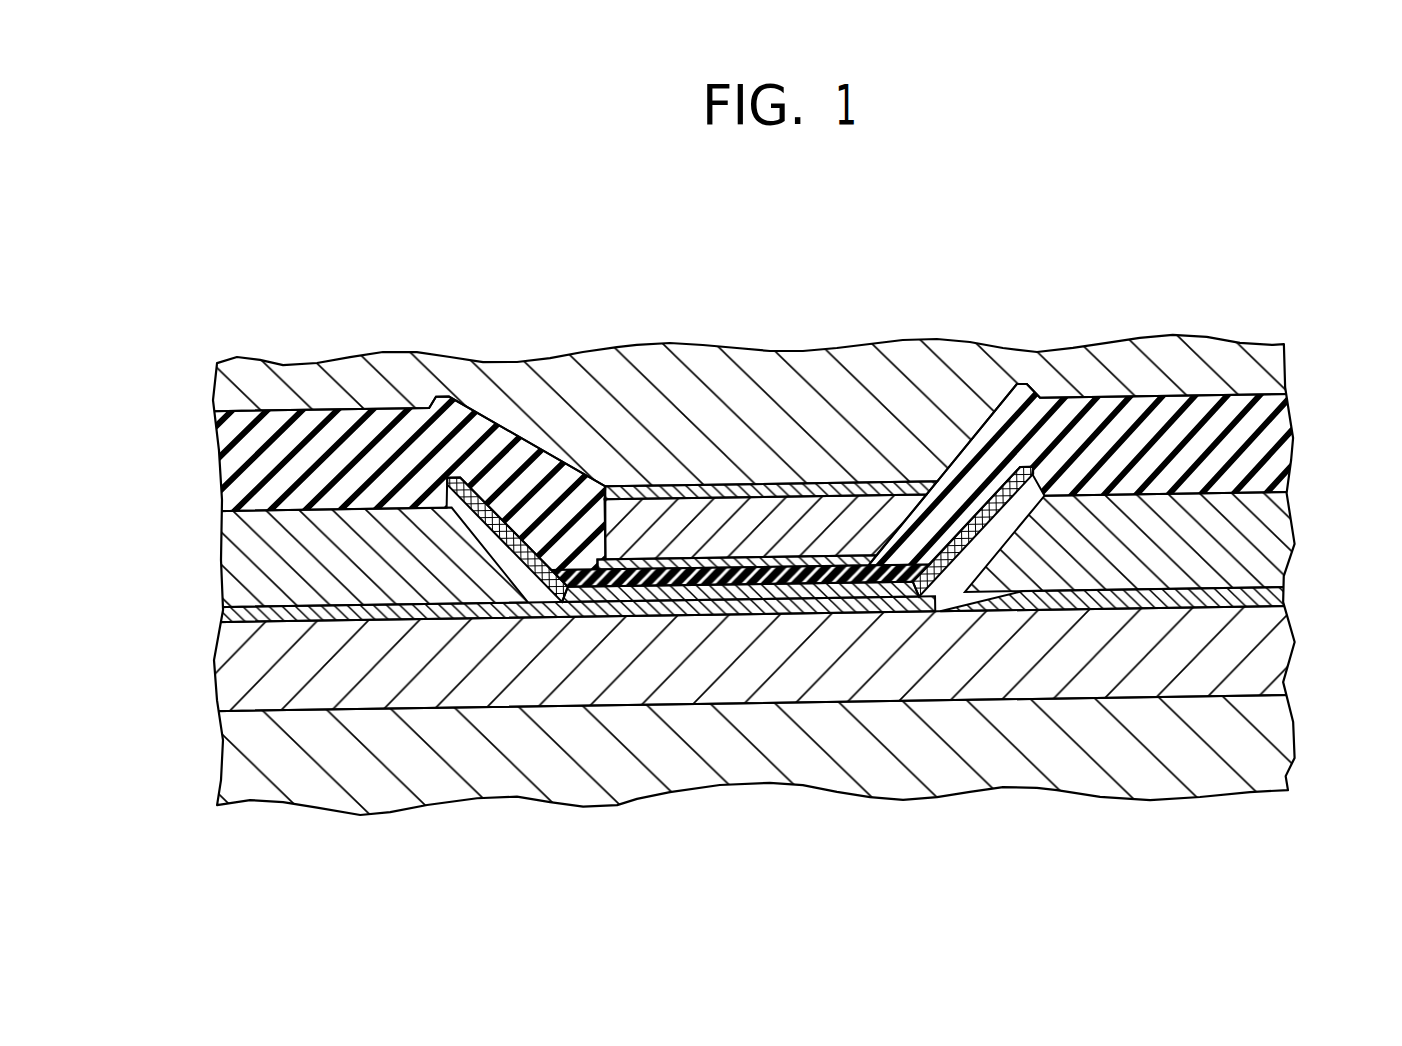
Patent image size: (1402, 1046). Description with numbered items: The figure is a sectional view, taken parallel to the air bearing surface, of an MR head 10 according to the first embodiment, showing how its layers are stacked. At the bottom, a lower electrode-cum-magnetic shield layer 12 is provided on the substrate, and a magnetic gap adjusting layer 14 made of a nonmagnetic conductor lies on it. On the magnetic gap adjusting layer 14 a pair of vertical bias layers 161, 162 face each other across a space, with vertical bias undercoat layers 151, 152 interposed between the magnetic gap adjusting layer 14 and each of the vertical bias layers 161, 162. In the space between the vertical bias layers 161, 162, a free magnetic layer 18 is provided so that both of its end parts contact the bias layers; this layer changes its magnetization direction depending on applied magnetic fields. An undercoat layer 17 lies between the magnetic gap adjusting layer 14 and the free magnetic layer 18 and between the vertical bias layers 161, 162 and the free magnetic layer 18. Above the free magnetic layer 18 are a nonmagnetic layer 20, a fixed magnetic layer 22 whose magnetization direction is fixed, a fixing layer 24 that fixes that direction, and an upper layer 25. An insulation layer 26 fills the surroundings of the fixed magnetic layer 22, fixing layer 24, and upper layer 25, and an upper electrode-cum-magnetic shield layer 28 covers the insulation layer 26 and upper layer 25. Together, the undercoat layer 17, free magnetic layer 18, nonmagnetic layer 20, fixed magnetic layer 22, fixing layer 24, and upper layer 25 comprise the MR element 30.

The MR head 10 is at (1158, 309).
The lower electrode-cum-magnetic shield layer 12 is at (1015, 768).
The magnetic gap adjusting layer 14 is at (322, 695).
The vertical bias undercoat layer 151 is at (238, 619).
The vertical bias undercoat layer 152 is at (1268, 598).
The vertical bias layer 161 is at (236, 559).
The vertical bias layer 162 is at (1265, 535).
The undercoat layer 17 is at (893, 603).
The free magnetic layer 18 is at (841, 588).
The nonmagnetic layer 20 is at (778, 571).
The fixed magnetic layer 22 is at (725, 552).
The fixing layer 24 is at (687, 518).
The upper layer 25 is at (636, 494).
The insulation layer 26 is at (236, 465).
The upper electrode-cum-magnetic shield layer 28 is at (345, 378).
The MR element 30 is at (741, 387).